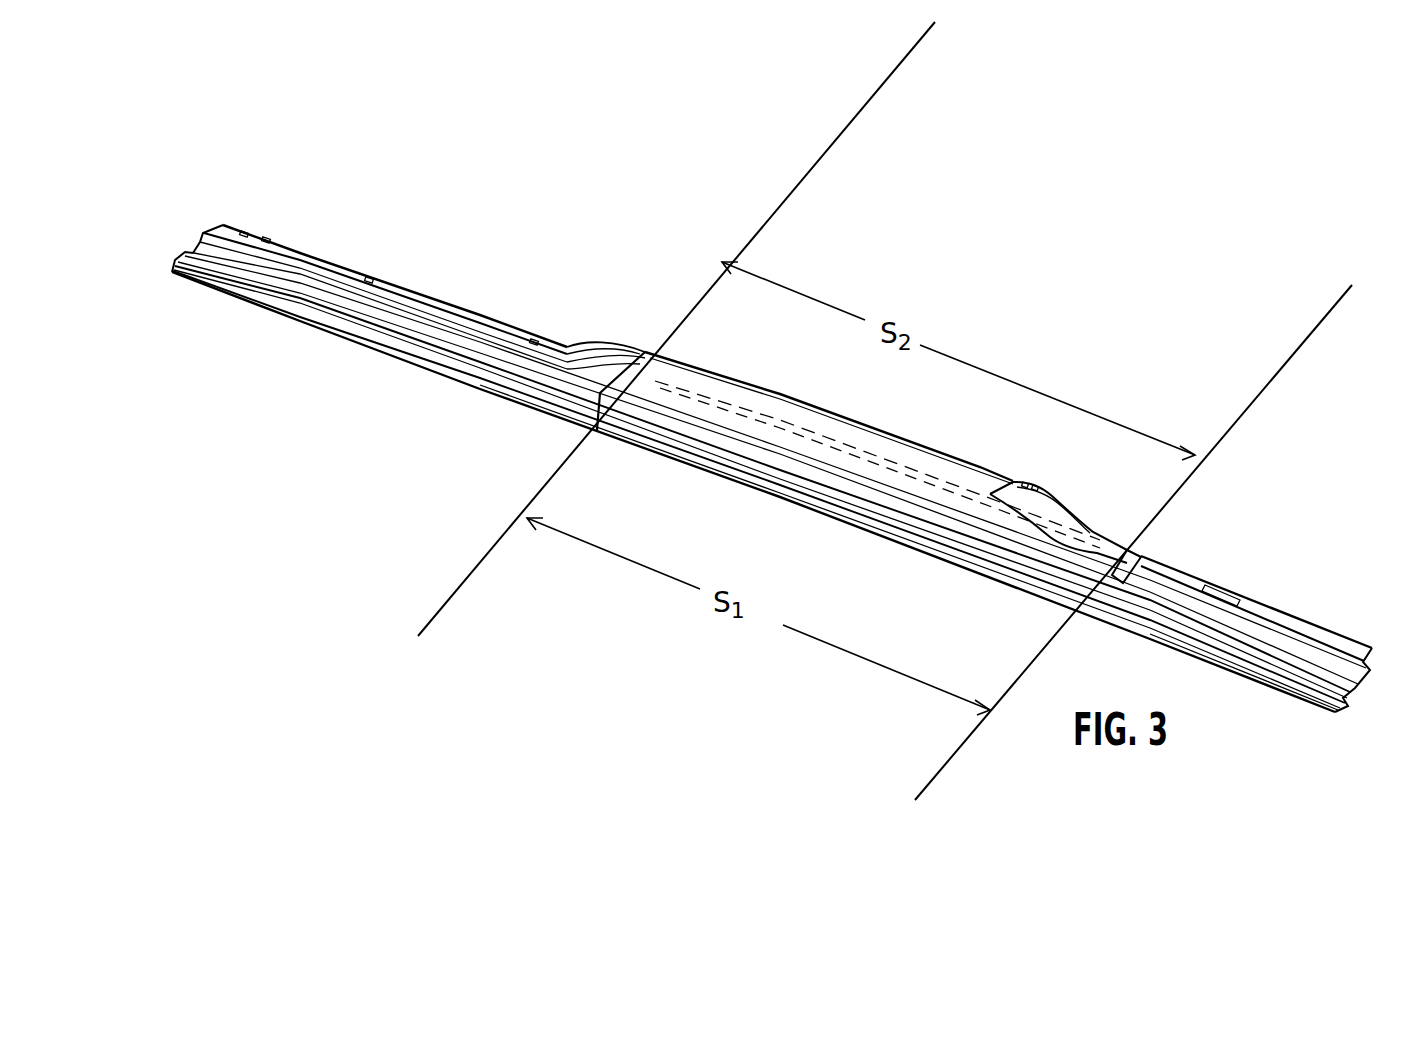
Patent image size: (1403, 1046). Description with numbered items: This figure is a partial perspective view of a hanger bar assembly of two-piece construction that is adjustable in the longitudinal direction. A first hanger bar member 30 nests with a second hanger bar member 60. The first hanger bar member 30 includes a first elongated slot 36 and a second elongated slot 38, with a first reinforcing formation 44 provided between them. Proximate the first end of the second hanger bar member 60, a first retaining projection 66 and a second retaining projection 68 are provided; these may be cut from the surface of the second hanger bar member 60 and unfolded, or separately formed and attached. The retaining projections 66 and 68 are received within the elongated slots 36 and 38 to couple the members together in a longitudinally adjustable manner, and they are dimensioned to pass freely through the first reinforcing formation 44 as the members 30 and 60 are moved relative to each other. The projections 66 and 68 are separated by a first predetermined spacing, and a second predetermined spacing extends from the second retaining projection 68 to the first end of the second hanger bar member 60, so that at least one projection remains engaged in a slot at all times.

The first hanger bar member 30 is at (367, 268).
The second elongated slot 38 is at (448, 320).
The first retaining projection 66 is at (632, 352).
The first reinforcing formation 44 is at (915, 465).
The second retaining projection 68 is at (1138, 565).
The first elongated slot 36 is at (1262, 598).
The second hanger bar member 60 is at (1295, 712).